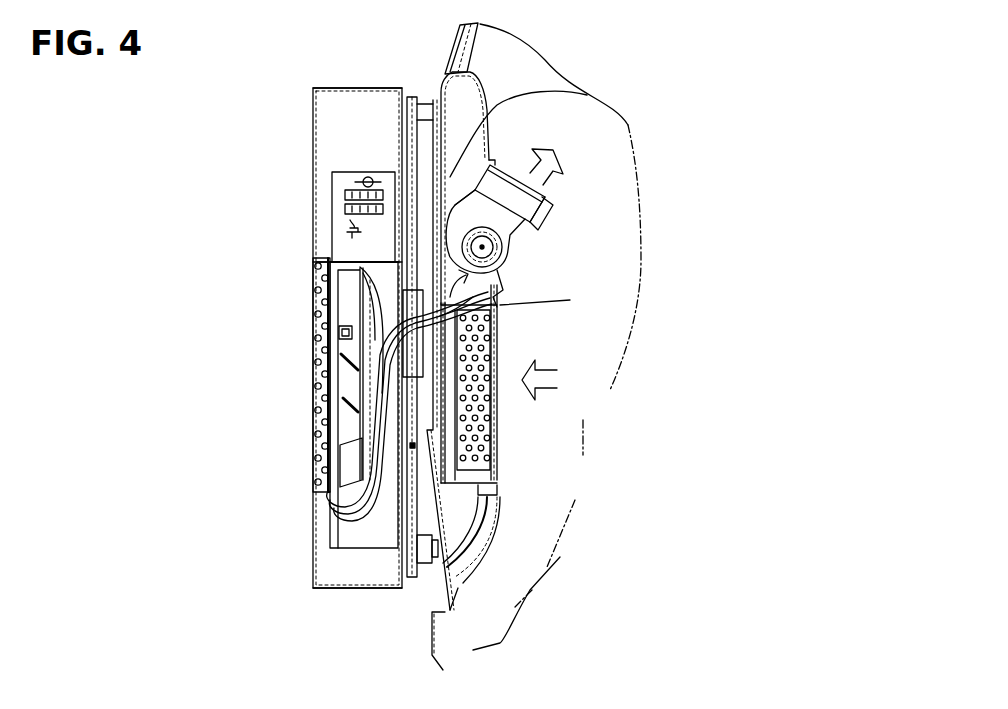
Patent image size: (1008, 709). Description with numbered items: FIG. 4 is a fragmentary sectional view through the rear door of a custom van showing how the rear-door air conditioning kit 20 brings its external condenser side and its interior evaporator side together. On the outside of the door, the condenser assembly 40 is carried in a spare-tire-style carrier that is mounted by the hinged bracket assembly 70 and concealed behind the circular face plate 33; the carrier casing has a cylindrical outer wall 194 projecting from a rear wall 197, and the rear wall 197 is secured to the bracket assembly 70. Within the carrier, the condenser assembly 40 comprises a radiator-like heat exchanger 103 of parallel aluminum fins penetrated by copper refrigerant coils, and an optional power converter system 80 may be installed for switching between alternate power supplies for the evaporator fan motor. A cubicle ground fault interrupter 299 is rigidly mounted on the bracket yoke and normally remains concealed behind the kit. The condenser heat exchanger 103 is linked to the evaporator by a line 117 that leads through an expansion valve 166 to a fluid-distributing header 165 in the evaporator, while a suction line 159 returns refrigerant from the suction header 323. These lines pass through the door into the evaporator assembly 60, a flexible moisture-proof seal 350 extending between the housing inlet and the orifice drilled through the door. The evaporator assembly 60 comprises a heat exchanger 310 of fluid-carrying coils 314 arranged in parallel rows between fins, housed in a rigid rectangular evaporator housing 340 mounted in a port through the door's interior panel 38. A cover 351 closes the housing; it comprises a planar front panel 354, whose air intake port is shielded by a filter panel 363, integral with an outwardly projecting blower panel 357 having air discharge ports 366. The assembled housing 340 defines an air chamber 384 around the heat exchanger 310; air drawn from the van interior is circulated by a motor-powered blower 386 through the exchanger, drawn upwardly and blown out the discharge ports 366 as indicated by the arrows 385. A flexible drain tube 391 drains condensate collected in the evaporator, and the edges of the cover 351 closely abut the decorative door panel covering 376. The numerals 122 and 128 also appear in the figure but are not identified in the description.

The air conditioning kit 20 is at (118, 140).
The external circular face plate 33 is at (290, 84).
The cylindrical outer wall 194 is at (360, 88).
The rear wall 197 is at (400, 116).
The flexible moisture-proof seal 350 is at (433, 200).
The power converter system 80 is at (318, 185).
The condenser heat exchanger 103 is at (312, 283).
The ground fault interrupter 299 is at (397, 302).
The condenser assembly 40 is at (241, 330).
The louver 122 is at (355, 408).
The line 117 is at (330, 503).
The wire 128 is at (330, 520).
The suction line 159 is at (350, 525).
The hinged bracket assembly 70 is at (404, 600).
The door panel 38 is at (494, 85).
The arrows 385 is at (553, 150).
The air discharge ports 366 is at (561, 183).
The blower panel 357 is at (556, 222).
The evaporator housing 340 is at (617, 207).
The motor-powered blower 386 is at (521, 240).
The evaporator assembly 60 is at (590, 253).
The evaporator cover 351 is at (516, 282).
The fluid-distributing header 165 is at (500, 295).
The expansion valve 166 is at (690, 268).
The evaporator heat exchanger 310 is at (490, 332).
The filter panel 363 is at (497, 352).
The fluid-carrying coils 314 is at (496, 402).
The front panel 354 is at (516, 463).
The suction header 323 is at (499, 478).
The air chamber 384 is at (494, 508).
The decorative door panel covering 376 is at (500, 530).
The flexible drain tube 391 is at (450, 583).